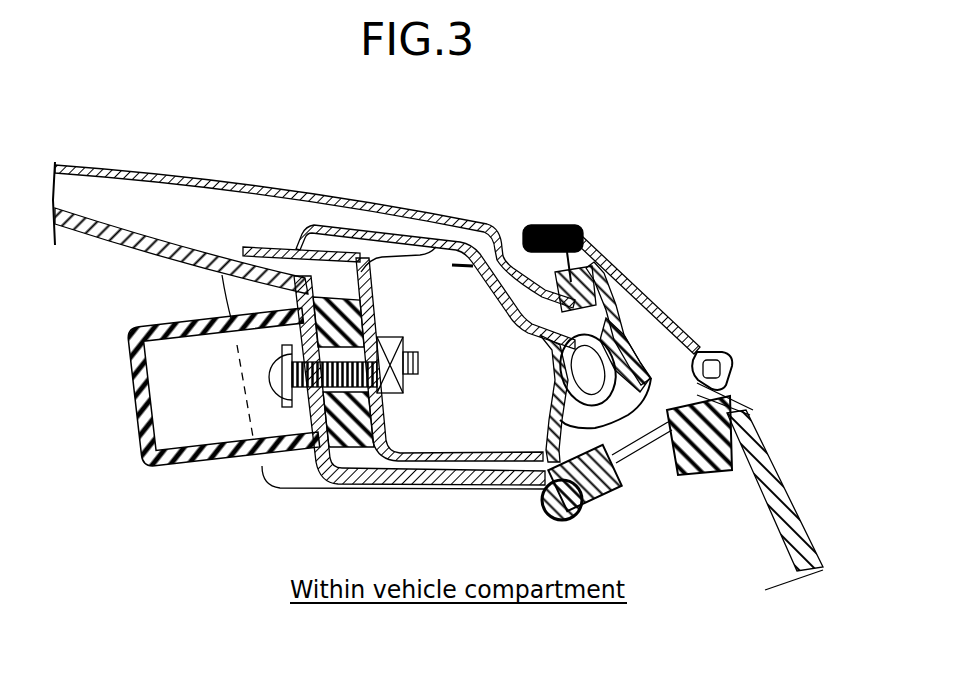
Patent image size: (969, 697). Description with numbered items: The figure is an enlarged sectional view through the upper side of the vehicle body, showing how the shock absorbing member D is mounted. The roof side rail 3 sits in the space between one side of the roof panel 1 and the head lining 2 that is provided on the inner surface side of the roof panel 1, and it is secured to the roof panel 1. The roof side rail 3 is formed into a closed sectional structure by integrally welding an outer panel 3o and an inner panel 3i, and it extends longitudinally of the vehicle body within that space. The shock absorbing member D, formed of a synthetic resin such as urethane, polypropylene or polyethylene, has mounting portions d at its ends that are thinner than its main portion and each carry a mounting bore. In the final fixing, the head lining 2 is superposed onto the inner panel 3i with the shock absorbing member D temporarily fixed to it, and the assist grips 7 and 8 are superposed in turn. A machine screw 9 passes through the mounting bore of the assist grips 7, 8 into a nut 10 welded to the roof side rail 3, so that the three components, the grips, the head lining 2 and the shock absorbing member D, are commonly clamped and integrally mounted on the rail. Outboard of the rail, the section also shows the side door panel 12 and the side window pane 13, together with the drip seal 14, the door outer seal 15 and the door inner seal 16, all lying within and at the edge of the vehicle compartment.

The roof panel 1 is at (367, 201).
The head lining 2 is at (123, 238).
The roof side rail 3 is at (501, 168).
The outer panel 3o is at (407, 240).
The inner panel 3i is at (436, 246).
The assist grip 7 is at (190, 466).
The assist grip 8 is at (223, 387).
The machine screw 9 is at (267, 377).
The nut 10 is at (397, 385).
The side door panel 12 is at (660, 287).
The side window pane 13 is at (769, 474).
The drip seal 14 is at (567, 228).
The door outer seal 15 is at (557, 355).
The door inner seal 16 is at (580, 517).
The mounting portion d is at (347, 323).
The shock absorbing member D is at (355, 458).